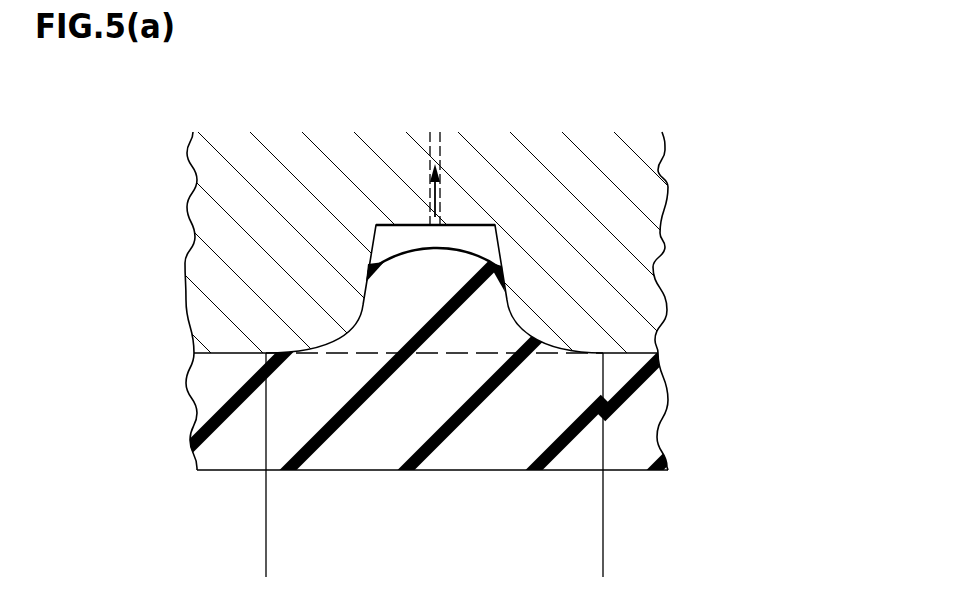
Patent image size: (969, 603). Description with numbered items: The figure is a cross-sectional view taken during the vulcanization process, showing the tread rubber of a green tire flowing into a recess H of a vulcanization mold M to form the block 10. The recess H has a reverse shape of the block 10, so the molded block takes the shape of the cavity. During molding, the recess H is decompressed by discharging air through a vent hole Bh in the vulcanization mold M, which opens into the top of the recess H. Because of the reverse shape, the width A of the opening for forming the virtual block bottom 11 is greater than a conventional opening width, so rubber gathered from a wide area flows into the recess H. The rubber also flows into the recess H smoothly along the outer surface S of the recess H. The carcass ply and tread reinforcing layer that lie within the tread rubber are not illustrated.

The block 10 is at (390, 323).
The virtual block bottom 11 is at (441, 353).
The outer surface of the recess S is at (333, 342).
The width of the opening A is at (268, 569).
The vent hole Bh is at (440, 158).
The vulcanization mold M is at (600, 198).
The recess H is at (477, 242).